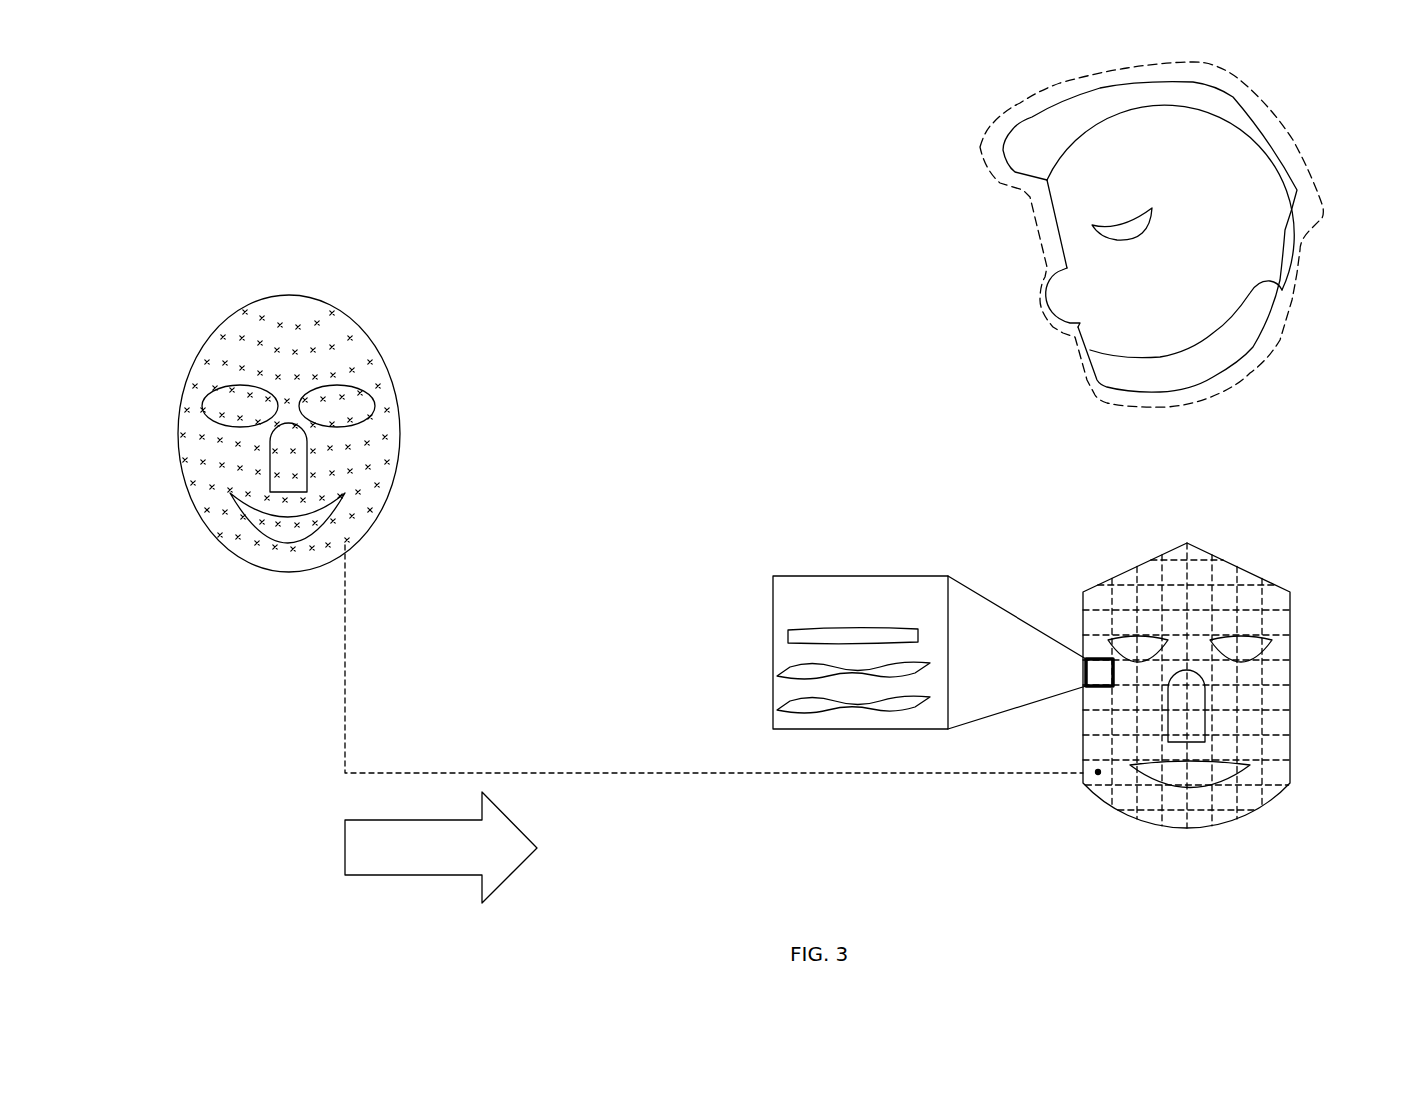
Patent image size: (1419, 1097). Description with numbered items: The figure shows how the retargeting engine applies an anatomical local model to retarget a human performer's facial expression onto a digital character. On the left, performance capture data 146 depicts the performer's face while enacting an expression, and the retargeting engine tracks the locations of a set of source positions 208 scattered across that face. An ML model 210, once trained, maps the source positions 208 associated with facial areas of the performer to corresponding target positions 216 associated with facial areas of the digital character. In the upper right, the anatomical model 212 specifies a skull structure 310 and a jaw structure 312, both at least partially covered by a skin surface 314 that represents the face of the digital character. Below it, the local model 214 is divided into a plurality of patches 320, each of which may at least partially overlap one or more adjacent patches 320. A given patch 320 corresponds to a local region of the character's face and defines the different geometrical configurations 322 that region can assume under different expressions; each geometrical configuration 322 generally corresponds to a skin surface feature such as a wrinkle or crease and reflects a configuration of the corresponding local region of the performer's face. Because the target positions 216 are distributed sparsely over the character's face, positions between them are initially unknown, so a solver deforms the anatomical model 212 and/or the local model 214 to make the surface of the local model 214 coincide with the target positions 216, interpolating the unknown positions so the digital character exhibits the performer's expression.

The performance capture data 146 is at (202, 237).
The source positions 208 is at (195, 386).
The ML model 210 is at (448, 861).
The anatomical model 212 is at (1275, 85).
The local model 214 is at (1302, 817).
The target positions 216 is at (1098, 775).
The skull structure 310 is at (1132, 172).
The jaw structure 312 is at (1127, 373).
The skin surface 314 is at (1040, 277).
The patch 320 is at (1086, 678).
The geometrical configuration 322 is at (933, 616).